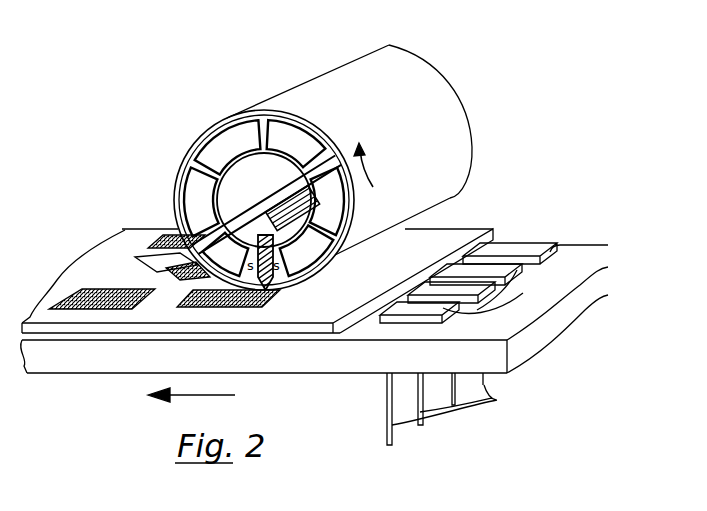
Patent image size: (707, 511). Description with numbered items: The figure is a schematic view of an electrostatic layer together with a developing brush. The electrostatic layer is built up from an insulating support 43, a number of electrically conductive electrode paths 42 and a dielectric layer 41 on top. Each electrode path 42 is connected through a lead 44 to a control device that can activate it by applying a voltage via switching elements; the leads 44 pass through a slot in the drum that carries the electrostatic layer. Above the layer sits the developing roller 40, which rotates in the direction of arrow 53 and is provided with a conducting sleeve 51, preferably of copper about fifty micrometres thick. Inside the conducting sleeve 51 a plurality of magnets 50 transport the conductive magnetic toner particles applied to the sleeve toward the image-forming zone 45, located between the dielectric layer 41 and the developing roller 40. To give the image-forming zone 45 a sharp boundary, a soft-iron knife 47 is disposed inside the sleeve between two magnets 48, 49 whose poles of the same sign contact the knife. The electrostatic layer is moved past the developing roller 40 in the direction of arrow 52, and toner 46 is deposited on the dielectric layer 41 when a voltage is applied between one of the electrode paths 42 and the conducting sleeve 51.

The developing roller 40 is at (425, 116).
The dielectric layer 41 is at (457, 232).
The electrode paths 42 is at (527, 292).
The insulating support 43 is at (279, 369).
The leads 44 is at (451, 409).
The image-forming zone 45 is at (265, 308).
The toner 46 is at (136, 270).
The soft-iron knife 47 is at (272, 194).
The magnet 48 is at (226, 254).
The magnet 49 is at (307, 251).
The magnets 50 is at (252, 155).
The conducting sleeve 51 is at (197, 138).
The arrow 52 is at (186, 394).
The arrow 53 is at (373, 178).